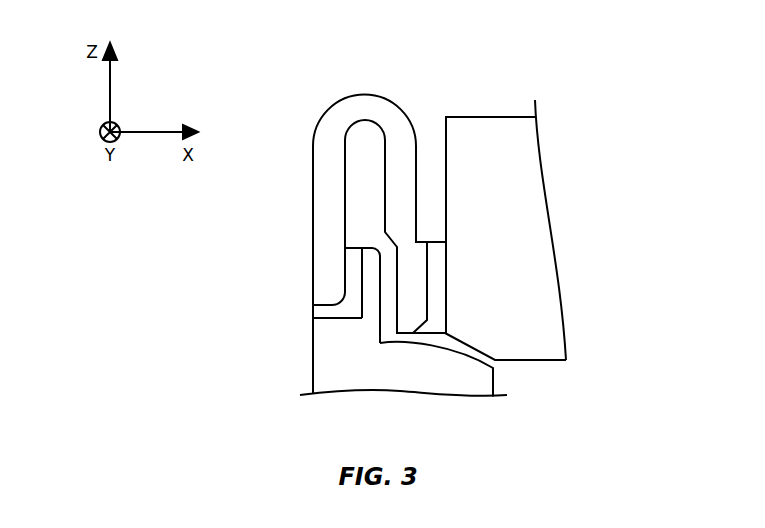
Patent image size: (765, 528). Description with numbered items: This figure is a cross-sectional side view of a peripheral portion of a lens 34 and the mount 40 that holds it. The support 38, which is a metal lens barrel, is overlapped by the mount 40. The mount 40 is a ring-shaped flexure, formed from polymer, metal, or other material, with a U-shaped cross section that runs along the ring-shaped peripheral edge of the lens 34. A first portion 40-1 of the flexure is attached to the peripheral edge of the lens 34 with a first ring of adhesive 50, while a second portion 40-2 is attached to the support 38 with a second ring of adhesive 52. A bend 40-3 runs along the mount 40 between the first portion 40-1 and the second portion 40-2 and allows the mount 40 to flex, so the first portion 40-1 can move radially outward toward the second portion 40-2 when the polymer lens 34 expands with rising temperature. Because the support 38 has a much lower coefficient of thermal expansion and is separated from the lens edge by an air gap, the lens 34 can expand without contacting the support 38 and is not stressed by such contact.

The lens 34 is at (537, 189).
The support 38 is at (407, 385).
The mount 40 is at (441, 179).
The first portion 40-1 is at (415, 273).
The second portion 40-2 is at (325, 215).
The bend 40-3 is at (385, 77).
The first ring of adhesive 50 is at (432, 305).
The second ring of adhesive 52 is at (340, 312).